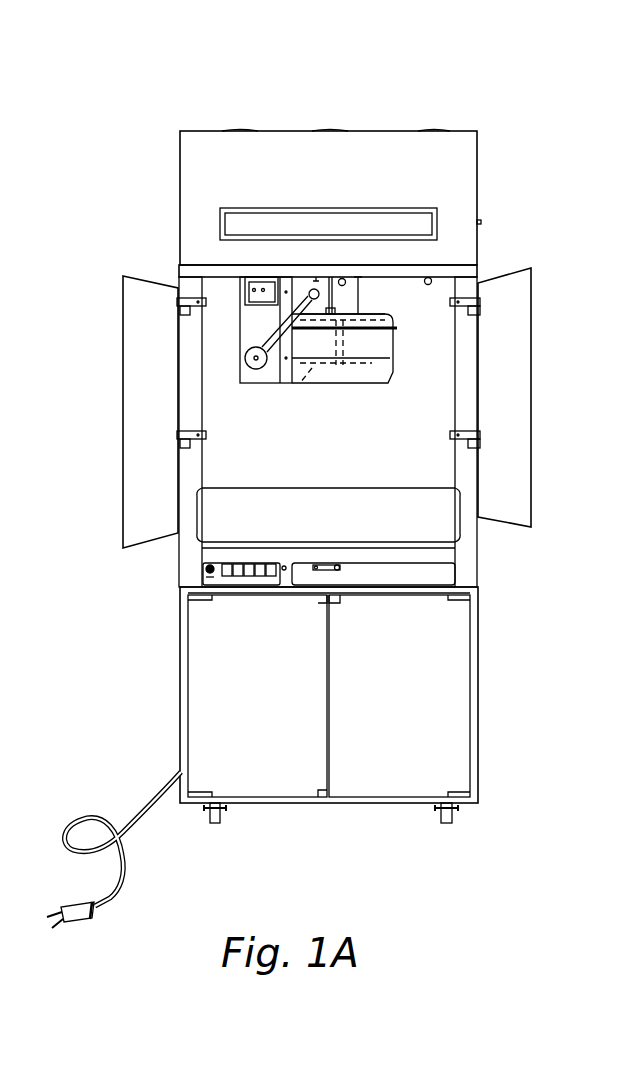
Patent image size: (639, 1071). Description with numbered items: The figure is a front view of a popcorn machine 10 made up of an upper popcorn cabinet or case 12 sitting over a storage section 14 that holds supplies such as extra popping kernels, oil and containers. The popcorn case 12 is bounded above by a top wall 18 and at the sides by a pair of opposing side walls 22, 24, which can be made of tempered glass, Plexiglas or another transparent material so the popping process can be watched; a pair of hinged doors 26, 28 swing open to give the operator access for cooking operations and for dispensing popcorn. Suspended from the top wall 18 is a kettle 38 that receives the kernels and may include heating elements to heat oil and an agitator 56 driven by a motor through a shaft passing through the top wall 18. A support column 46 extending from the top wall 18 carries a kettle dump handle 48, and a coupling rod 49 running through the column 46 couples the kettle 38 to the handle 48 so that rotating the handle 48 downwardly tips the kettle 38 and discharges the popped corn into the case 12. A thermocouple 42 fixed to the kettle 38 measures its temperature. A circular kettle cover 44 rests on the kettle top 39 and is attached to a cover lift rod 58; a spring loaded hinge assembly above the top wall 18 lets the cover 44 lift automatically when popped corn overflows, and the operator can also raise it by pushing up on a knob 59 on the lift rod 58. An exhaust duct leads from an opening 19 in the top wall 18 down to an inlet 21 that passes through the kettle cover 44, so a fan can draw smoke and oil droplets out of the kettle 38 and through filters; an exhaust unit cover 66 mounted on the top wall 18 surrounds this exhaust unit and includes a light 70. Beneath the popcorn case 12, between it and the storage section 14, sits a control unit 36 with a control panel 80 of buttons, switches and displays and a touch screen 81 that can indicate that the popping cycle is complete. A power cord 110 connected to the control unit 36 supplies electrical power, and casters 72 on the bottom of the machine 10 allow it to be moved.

The popcorn machine 10 is at (118, 133).
The popcorn cabinet or case 12 is at (178, 290).
The storage section 14 is at (480, 688).
The top wall 18 is at (428, 277).
The opening 19 is at (337, 277).
The inlet 21 is at (388, 338).
The side wall 22 is at (178, 488).
The side wall 24 is at (478, 415).
The hinged door 26 is at (123, 400).
The hinged door 28 is at (532, 360).
The control unit 36 is at (220, 552).
The kettle 38 is at (385, 345).
The kettle top 39 is at (395, 329).
The thermocouple 42 is at (343, 383).
The kettle cover 44 is at (395, 322).
The support column 46 is at (252, 335).
The kettle dump handle 48 is at (275, 333).
The coupling rod 49 is at (247, 358).
The agitator 56 is at (300, 383).
The cover lift rod 58 is at (333, 297).
The knob 59 is at (322, 288).
The exhaust unit cover 66 is at (479, 157).
The light 70 is at (220, 225).
The wheels or casters 72 is at (432, 812).
The control panel 80 is at (203, 578).
The touch screen 81 is at (245, 575).
The power cord 110 is at (135, 812).